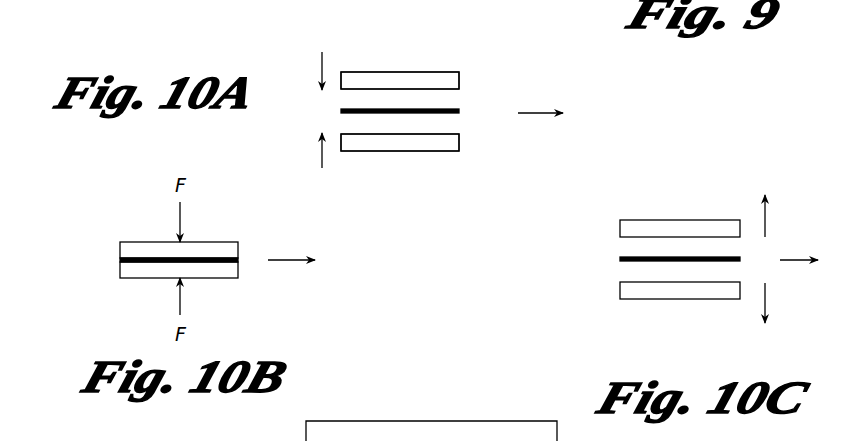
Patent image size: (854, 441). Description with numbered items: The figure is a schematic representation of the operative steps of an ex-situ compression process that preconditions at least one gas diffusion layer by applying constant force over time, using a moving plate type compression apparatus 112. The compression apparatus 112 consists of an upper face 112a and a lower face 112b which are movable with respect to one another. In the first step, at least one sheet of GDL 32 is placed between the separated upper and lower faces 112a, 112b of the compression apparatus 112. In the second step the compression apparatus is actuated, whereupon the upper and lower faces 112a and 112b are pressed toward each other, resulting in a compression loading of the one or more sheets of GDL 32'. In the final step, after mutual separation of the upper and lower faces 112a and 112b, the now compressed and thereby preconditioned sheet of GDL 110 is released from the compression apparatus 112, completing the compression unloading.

In FIG. 10A, the compression apparatus 112 is at (462, 133).
In FIG. 10A, the upper face 112a is at (405, 72).
In FIG. 10B, the upper face 112a is at (205, 242).
In FIG. 10C, the upper face 112a is at (702, 220).
In FIG. 10A, the lower face 112b is at (432, 152).
In FIG. 10B, the lower face 112b is at (212, 278).
In FIG. 10C, the lower face 112b is at (648, 299).
In FIG. 10A, the sheet of GDL 32 is at (358, 121).
In FIG. 10B, the sheet of GDL under compression loading 32' is at (140, 283).
In FIG. 10C, the compressed, preconditioned sheet of GDL 110 is at (621, 258).